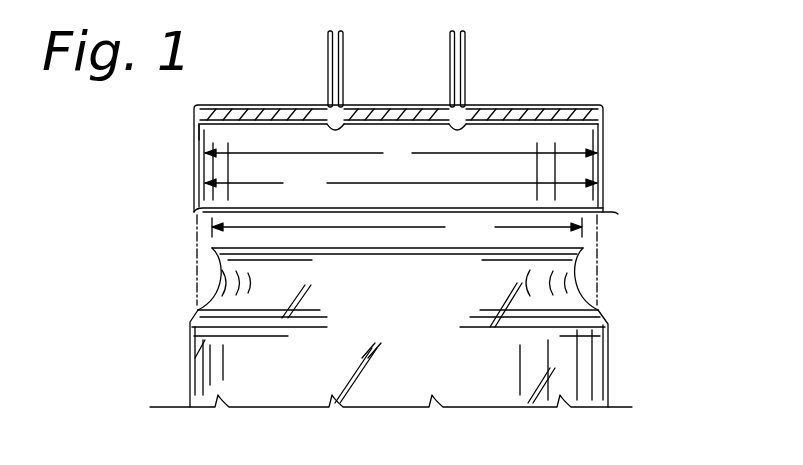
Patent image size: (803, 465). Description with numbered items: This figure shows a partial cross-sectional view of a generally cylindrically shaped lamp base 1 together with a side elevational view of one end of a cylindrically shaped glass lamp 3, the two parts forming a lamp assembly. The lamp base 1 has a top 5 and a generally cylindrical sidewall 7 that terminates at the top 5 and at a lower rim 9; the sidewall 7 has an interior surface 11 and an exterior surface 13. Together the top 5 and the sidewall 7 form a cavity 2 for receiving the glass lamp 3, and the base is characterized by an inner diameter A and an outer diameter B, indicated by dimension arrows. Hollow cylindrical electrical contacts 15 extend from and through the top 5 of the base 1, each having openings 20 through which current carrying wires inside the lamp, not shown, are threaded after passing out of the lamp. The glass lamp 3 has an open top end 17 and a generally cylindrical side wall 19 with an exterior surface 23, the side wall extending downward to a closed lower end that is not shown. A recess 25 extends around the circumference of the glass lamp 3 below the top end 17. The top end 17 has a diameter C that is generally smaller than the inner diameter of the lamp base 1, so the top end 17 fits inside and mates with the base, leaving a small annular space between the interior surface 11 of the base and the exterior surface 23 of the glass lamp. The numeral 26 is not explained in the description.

The lamp base 1 is at (647, 88).
The cavity 2 is at (271, 140).
The glass lamp 3 is at (152, 388).
The top 5 is at (564, 105).
The sidewall 7 is at (620, 153).
The lower rim 9 is at (616, 213).
The interior surface 11 is at (200, 133).
The exterior surface 13 is at (195, 178).
The electrical contacts 15 is at (464, 32).
The open top end 17 is at (216, 250).
The side wall 19 is at (618, 373).
The openings 20 is at (455, 130).
The exterior surface 23 is at (193, 368).
The recess 25 is at (580, 278).
The container base (off sheet) 26 is at (92, 462).